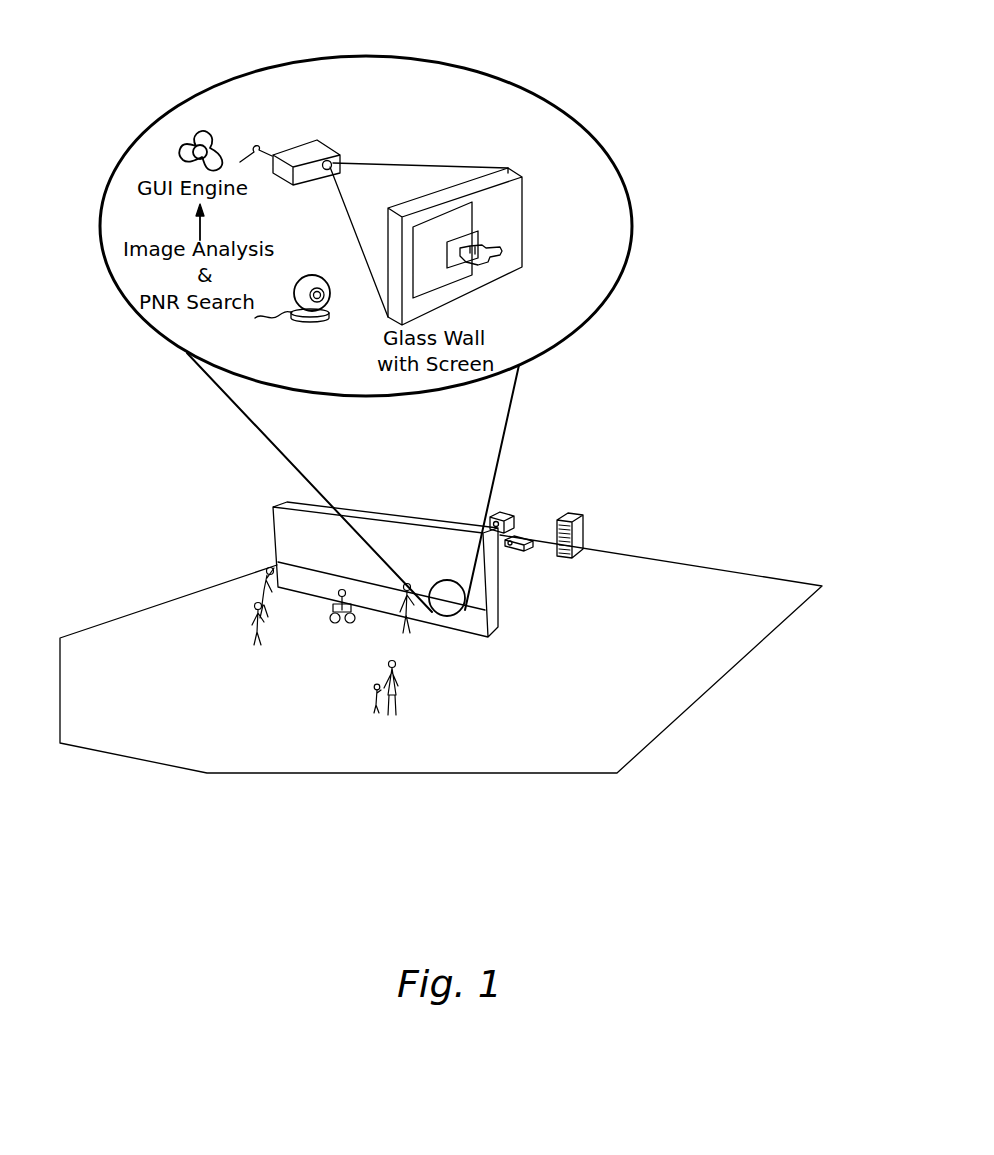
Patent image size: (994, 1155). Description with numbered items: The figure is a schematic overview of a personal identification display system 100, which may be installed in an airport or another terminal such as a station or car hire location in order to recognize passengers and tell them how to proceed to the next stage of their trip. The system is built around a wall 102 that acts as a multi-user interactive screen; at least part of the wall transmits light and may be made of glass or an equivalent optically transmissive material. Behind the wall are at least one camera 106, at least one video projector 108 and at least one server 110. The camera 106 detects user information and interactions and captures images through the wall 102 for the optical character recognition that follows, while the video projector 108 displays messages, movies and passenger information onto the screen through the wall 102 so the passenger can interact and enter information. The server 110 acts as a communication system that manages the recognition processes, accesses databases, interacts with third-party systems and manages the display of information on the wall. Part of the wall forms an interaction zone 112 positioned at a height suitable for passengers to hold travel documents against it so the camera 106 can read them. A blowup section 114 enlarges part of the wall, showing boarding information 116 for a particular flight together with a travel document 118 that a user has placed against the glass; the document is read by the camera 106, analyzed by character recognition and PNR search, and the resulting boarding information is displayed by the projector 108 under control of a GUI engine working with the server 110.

The personal identification display system 100 is at (490, 792).
The wall 102 is at (523, 207).
The camera 106 is at (300, 300).
The video projector 108 is at (303, 143).
The server 110 is at (580, 528).
The interaction zone 112 is at (520, 612).
The blowup section 114 is at (543, 98).
The boarding information 116 is at (442, 268).
The travel document 118 is at (470, 238).